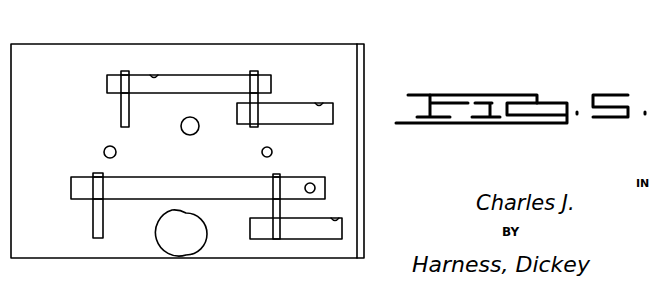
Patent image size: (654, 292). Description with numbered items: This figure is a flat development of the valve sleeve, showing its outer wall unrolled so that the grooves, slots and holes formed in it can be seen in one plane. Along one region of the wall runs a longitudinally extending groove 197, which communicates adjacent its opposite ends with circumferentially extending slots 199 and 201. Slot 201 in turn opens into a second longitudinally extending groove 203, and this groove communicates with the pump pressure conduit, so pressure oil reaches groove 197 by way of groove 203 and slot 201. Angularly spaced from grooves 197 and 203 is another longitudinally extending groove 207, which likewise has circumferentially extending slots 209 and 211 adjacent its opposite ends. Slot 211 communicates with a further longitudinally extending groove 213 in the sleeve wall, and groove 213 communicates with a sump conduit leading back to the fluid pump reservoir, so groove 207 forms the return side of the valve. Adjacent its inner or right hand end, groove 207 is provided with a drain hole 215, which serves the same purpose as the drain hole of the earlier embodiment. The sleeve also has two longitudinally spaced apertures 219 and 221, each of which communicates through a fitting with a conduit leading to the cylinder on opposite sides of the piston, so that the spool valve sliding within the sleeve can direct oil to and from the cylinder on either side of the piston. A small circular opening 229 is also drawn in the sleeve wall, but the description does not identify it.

The longitudinally extending groove 197 is at (160, 76).
The circumferentially extending slot 199 is at (123, 104).
The circumferentially extending slot 201 is at (260, 98).
The second longitudinally extending groove 203 is at (328, 104).
The longitudinally extending groove 207 is at (126, 194).
The circumferentially extending slot 209 is at (93, 226).
The circumferentially extending slot 211 is at (275, 217).
The further longitudinally extending groove 213 is at (343, 225).
The drain hole 215 is at (318, 188).
The aperture 219 is at (109, 148).
The aperture 221 is at (262, 152).
The stud 229 is at (190, 119).